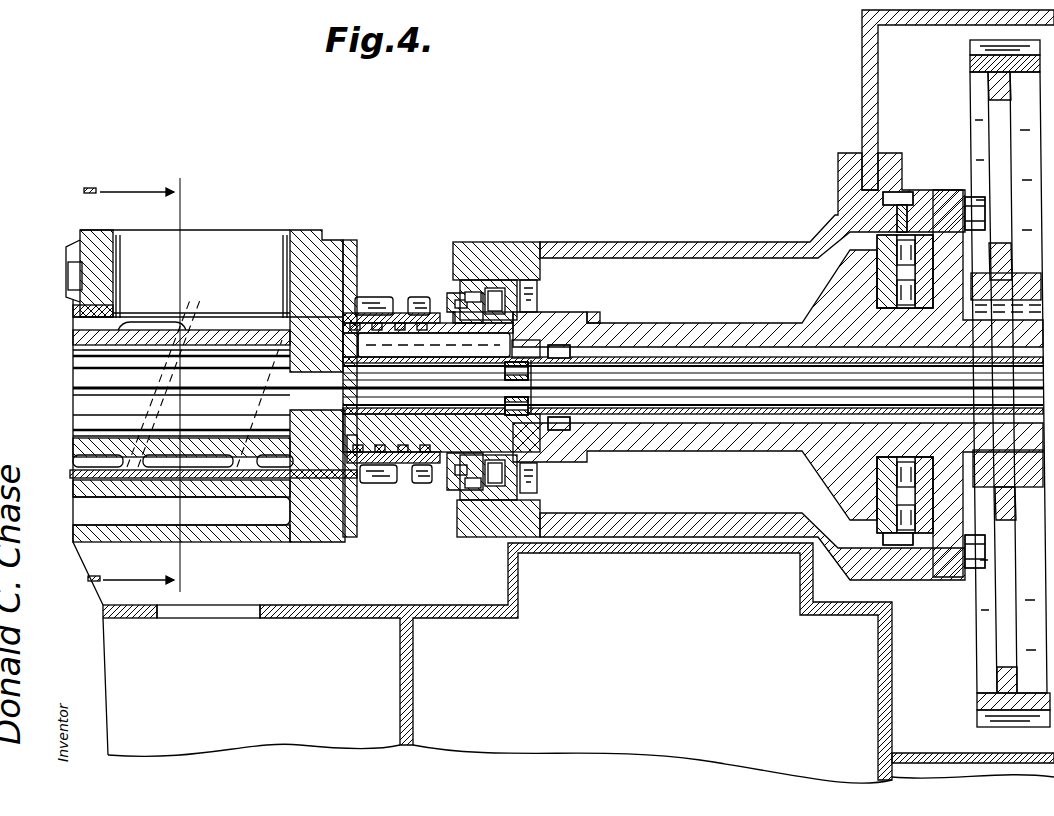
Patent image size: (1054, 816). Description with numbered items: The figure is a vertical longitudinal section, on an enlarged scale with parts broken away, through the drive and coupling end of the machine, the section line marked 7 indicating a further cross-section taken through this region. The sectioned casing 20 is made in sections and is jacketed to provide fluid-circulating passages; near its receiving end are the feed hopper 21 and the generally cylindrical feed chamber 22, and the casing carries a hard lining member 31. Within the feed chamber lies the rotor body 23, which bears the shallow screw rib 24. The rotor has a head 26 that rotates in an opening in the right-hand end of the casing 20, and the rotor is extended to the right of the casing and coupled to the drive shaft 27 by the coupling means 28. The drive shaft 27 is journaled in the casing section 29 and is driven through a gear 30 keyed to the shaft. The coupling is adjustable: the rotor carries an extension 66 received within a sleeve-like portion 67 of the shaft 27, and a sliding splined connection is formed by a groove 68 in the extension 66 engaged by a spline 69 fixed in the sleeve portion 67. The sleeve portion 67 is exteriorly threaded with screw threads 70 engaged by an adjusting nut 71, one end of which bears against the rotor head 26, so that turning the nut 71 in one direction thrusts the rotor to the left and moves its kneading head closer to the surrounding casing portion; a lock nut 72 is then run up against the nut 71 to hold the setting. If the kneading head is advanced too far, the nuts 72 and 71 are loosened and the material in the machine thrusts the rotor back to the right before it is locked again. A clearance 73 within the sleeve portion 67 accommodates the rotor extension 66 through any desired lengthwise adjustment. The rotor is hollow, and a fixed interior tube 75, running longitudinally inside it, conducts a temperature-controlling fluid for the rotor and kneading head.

The section line 7- 7 is at (132, 381).
The casing 20 is at (76, 246).
The feed hopper 21 is at (226, 242).
The feed chamber 22 is at (73, 316).
The rotor body 23 is at (73, 340).
The shallow screw rib 24 is at (186, 318).
The rotor head 26 is at (350, 482).
The drive shaft 27 is at (750, 322).
The coupling means 28 is at (440, 510).
The casing section 29 is at (706, 242).
The gear 30 is at (972, 46).
The lining member 31 is at (73, 474).
The rotor extension 66 is at (497, 425).
The sleeve-like portion 67 is at (560, 342).
The groove 68 is at (533, 346).
The spline 69 is at (490, 284).
The screw threads 70 is at (440, 326).
The adjusting nut 71 is at (366, 296).
The lock nut 72 is at (414, 296).
The clearance 73 is at (600, 318).
The interior tube 75 is at (735, 392).